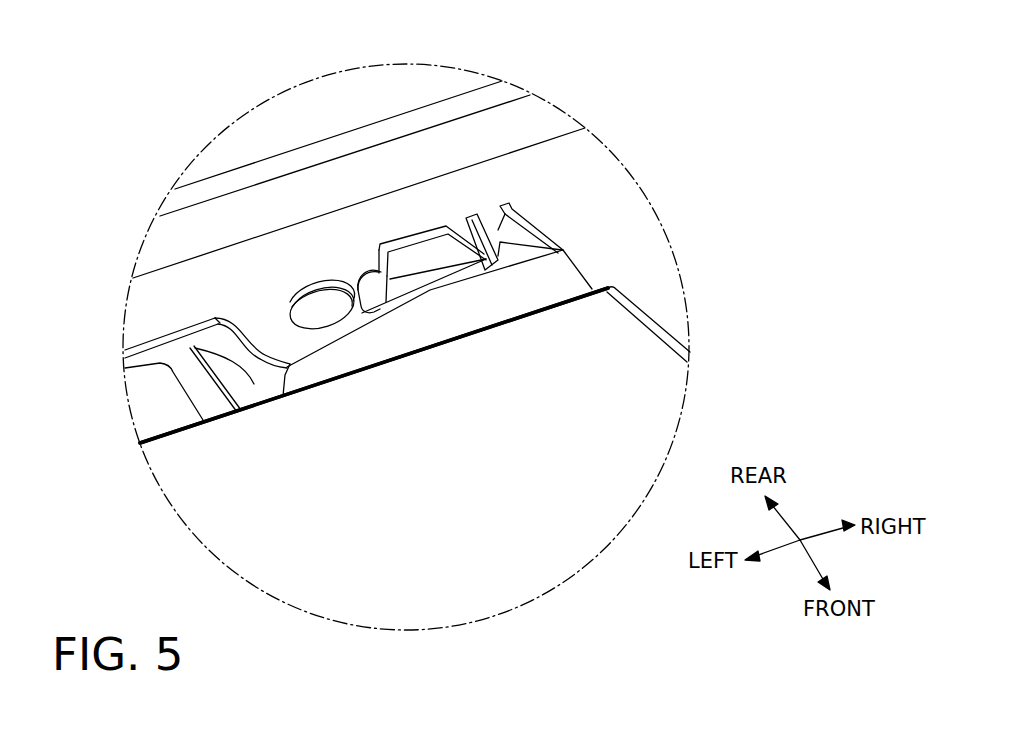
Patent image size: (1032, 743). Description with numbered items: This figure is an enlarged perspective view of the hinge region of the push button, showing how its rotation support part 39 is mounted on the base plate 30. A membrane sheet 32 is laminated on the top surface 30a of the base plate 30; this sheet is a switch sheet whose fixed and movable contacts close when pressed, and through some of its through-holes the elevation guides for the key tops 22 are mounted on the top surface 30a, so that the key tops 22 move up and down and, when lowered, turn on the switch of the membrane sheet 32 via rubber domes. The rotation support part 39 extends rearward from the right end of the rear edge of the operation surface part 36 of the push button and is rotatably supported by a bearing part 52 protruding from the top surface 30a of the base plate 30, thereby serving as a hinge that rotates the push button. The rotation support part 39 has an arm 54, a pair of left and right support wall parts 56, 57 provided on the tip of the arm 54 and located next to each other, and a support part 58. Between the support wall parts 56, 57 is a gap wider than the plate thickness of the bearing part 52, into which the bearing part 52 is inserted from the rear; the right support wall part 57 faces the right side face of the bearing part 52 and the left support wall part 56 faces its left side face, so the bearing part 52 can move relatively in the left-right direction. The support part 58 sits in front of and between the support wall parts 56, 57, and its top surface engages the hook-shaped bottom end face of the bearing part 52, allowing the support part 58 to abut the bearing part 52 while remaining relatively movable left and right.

The key tops 22 is at (309, 100).
The base plate 30 is at (225, 347).
The top surface 30a is at (262, 375).
The membrane sheet 32 is at (278, 252).
The operation surface part 36 is at (614, 374).
The rotation support part 39 is at (588, 232).
The bearing part 52 is at (479, 222).
The arm 54 is at (437, 320).
The left support wall part 56 is at (432, 243).
The right support wall part 57 is at (510, 226).
The support part 58 is at (508, 262).